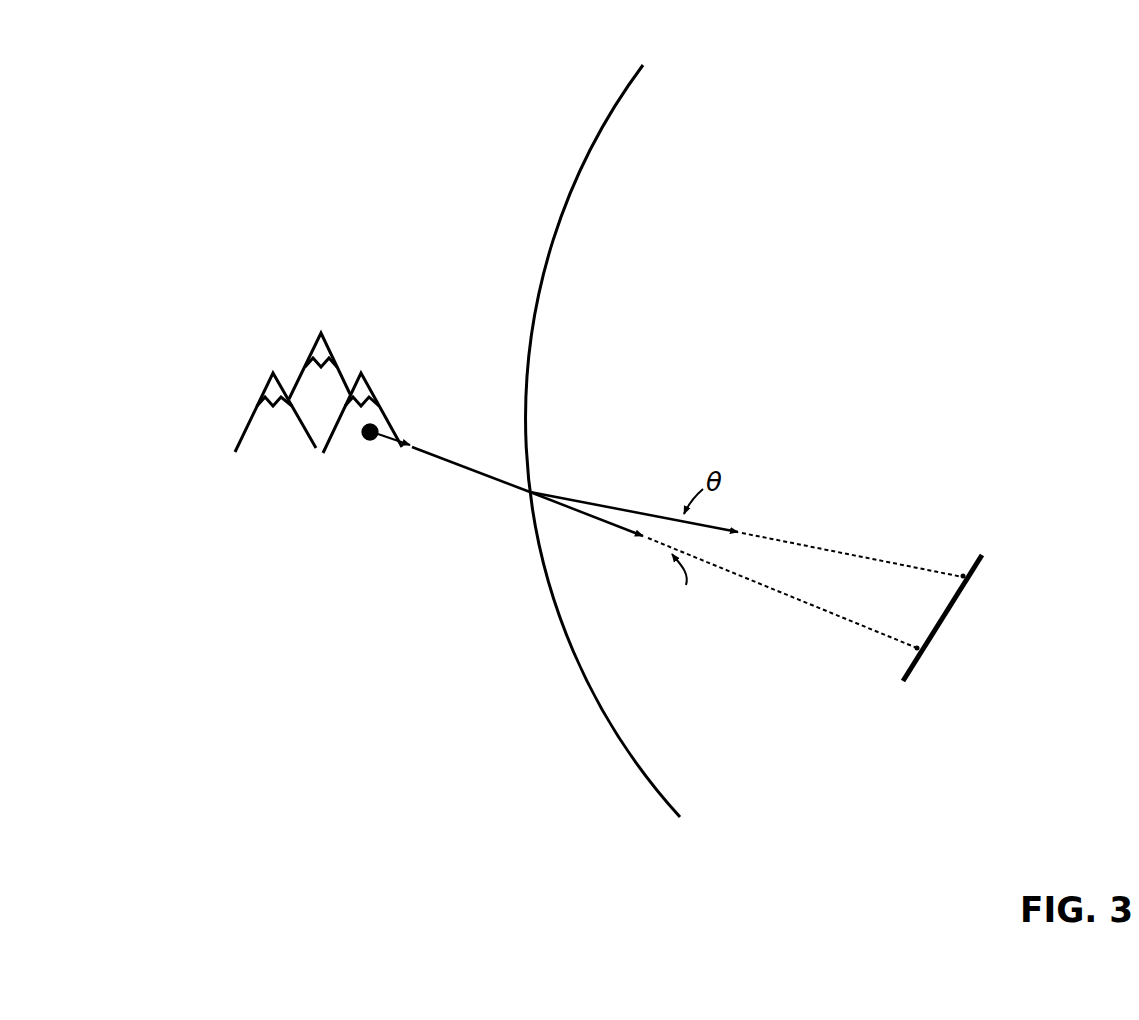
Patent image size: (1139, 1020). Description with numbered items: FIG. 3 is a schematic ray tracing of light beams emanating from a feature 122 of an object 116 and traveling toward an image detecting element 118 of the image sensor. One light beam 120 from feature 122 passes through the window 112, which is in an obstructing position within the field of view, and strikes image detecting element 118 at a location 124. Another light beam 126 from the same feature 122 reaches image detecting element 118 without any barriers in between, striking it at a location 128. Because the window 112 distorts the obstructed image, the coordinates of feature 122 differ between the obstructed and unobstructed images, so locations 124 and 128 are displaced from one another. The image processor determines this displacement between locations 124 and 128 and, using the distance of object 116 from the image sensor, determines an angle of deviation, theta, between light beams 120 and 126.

The window 112 is at (628, 87).
The object 116 is at (314, 275).
The image detecting element 118 is at (903, 683).
The light beam 120 is at (877, 558).
The feature 122 is at (372, 440).
The location 124 is at (963, 575).
The light beam 126 is at (738, 572).
The location 128 is at (917, 648).